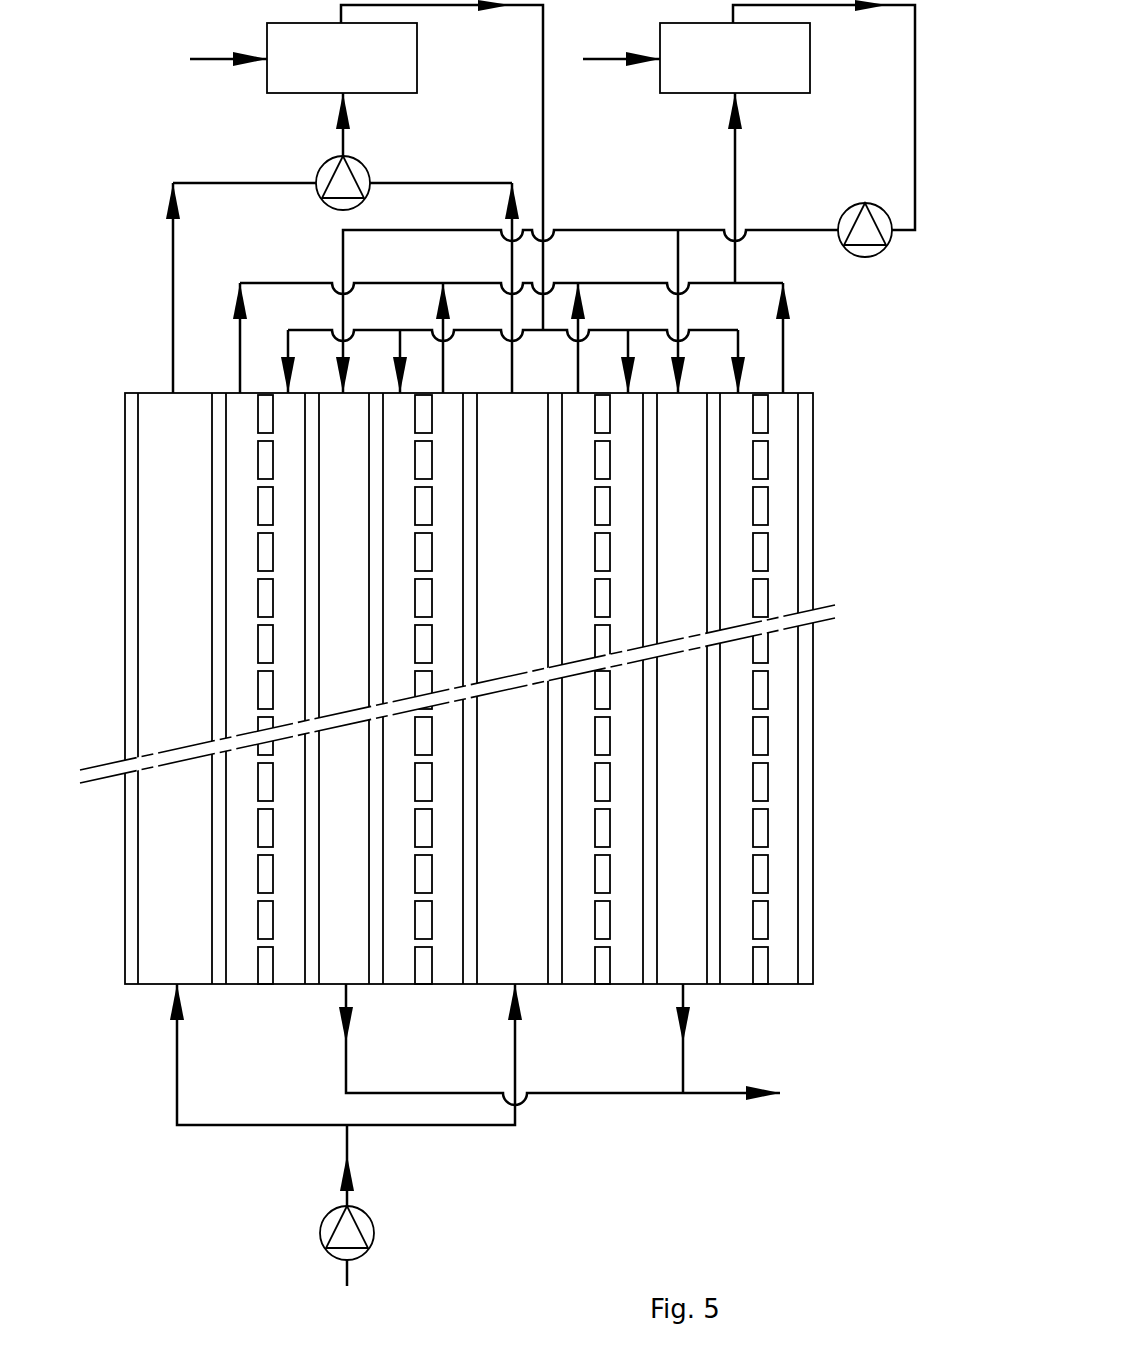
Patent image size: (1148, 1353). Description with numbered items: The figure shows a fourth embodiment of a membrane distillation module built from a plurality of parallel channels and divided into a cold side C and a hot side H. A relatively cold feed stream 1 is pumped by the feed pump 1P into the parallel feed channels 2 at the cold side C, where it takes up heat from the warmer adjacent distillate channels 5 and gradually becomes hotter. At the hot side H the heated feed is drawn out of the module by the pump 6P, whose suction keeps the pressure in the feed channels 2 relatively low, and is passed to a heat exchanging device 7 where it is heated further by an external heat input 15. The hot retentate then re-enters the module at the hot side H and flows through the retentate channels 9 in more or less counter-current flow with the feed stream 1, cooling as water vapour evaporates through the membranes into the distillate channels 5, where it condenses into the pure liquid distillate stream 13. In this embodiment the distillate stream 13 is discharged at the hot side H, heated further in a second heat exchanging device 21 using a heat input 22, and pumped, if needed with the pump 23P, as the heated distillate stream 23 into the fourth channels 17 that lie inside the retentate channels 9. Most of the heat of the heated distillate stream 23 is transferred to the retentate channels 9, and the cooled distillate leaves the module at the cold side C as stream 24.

The feed stream 1 is at (177, 1037).
The feed pump 1P is at (330, 1210).
The feed channels 2 is at (169, 910).
The distillate channels 5 is at (232, 450).
The pump 6P is at (323, 159).
The heat exchanging device 7 is at (333, 78).
The retentate channels 9 is at (282, 910).
The distillate stream 13 is at (238, 360).
The external heat input 15 is at (210, 47).
The fourth channels 17 is at (327, 450).
The heat exchanging device 21 is at (721, 78).
The heat input 22 is at (603, 47).
The heated distillate stream 23 is at (915, 59).
The pump 23P is at (845, 204).
The cooled distillate stream 24 is at (344, 1062).
The hot side H is at (62, 577).
The cold side C is at (62, 910).